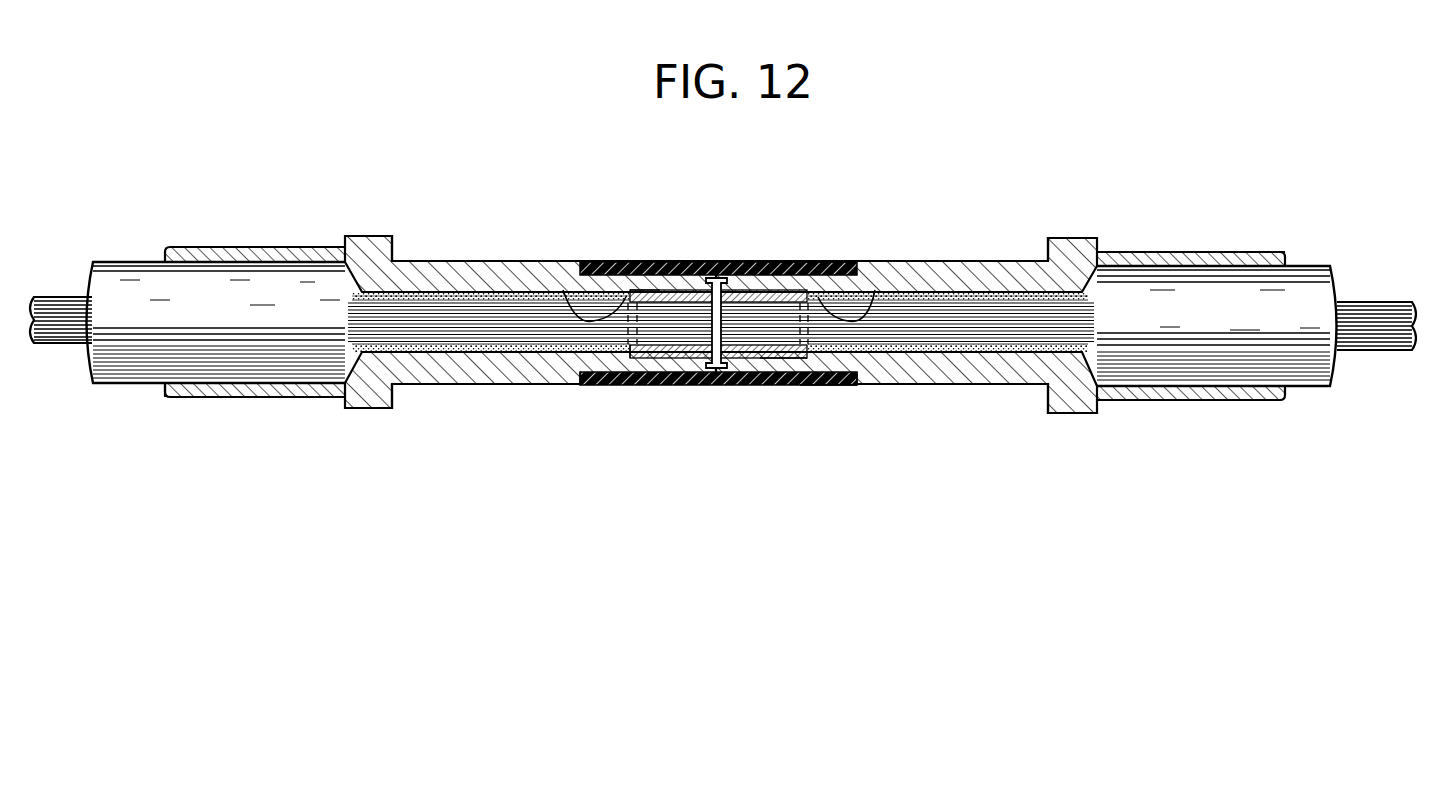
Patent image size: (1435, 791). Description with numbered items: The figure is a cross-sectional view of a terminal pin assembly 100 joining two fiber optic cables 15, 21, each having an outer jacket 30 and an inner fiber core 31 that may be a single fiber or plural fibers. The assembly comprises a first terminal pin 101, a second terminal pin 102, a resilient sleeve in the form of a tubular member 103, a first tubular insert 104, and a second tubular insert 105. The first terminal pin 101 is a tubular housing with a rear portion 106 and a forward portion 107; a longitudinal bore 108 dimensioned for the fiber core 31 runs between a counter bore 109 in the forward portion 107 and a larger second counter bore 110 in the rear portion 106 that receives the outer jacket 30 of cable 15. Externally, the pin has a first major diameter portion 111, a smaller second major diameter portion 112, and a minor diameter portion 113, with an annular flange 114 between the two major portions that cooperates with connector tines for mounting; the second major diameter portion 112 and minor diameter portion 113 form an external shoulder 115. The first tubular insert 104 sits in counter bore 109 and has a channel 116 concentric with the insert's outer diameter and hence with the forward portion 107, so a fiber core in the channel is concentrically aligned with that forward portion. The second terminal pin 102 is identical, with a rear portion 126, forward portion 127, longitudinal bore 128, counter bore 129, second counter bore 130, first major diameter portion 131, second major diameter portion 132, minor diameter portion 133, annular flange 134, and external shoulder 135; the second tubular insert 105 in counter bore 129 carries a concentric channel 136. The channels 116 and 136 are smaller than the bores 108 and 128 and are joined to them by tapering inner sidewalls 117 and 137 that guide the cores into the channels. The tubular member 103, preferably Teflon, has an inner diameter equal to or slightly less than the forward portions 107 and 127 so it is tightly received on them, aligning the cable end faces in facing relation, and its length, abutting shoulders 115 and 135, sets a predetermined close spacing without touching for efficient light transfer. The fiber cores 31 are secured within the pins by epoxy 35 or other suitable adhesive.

The terminal pin assembly 100 is at (440, 184).
The fiber optic cable 15 is at (135, 318).
The fiber optic cable 21 is at (1293, 317).
The outer jacket 30 is at (155, 262).
The fiber core 31 is at (56, 297).
The epoxy 35 is at (470, 294).
The first terminal pin 101 is at (513, 274).
The second terminal pin 102 is at (917, 274).
The tubular member 103 is at (727, 262).
The first tubular insert 104 is at (668, 262).
The second tubular insert 105 is at (760, 262).
The rear portion 106 is at (223, 397).
The forward portion 107 is at (630, 385).
The longitudinal bore 108 is at (447, 350).
The counter bore 109 is at (663, 360).
The second counter bore 110 is at (277, 365).
The first major diameter portion 111 is at (180, 397).
The second major diameter portion 112 is at (407, 386).
The minor diameter portion 113 is at (660, 362).
The annular flange 114 is at (393, 247).
The external shoulder 115 is at (597, 385).
The channel 116 is at (650, 290).
The tapering inner sidewall 117 is at (563, 290).
The rear portion 126 is at (1202, 400).
The forward portion 127 is at (808, 385).
The longitudinal bore 128 is at (985, 334).
The counter bore 129 is at (738, 360).
The second counter bore 130 is at (1117, 380).
The first major diameter portion 131 is at (1188, 253).
The second major diameter portion 132 is at (1012, 272).
The minor diameter portion 133 is at (822, 262).
The annular flange 134 is at (1072, 238).
The external shoulder 135 is at (838, 385).
The channel 136 is at (770, 358).
The tapering inner sidewall 137 is at (875, 290).